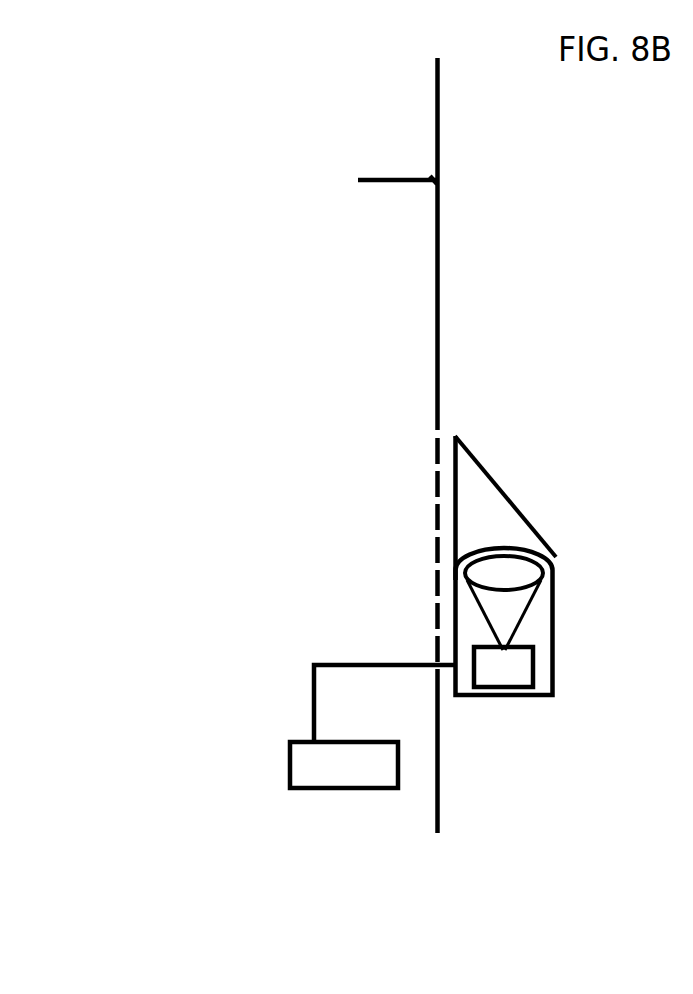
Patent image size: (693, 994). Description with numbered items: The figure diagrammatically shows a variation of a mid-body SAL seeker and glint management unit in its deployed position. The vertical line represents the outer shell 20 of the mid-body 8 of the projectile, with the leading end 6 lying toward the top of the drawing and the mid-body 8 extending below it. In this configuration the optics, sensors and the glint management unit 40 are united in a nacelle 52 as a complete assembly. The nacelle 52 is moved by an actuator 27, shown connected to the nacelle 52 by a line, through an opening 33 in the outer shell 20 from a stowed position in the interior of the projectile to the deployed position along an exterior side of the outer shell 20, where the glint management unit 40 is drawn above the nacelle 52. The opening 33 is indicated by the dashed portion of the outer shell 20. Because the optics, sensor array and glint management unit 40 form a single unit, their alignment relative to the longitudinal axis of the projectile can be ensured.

The leading end 6 is at (397, 156).
The mid-body 8 is at (413, 208).
The outer shell 20 is at (437, 777).
The actuator 27 is at (335, 787).
The opening 33 is at (437, 520).
The glint management unit 40 is at (505, 503).
The nacelle 52 is at (553, 628).